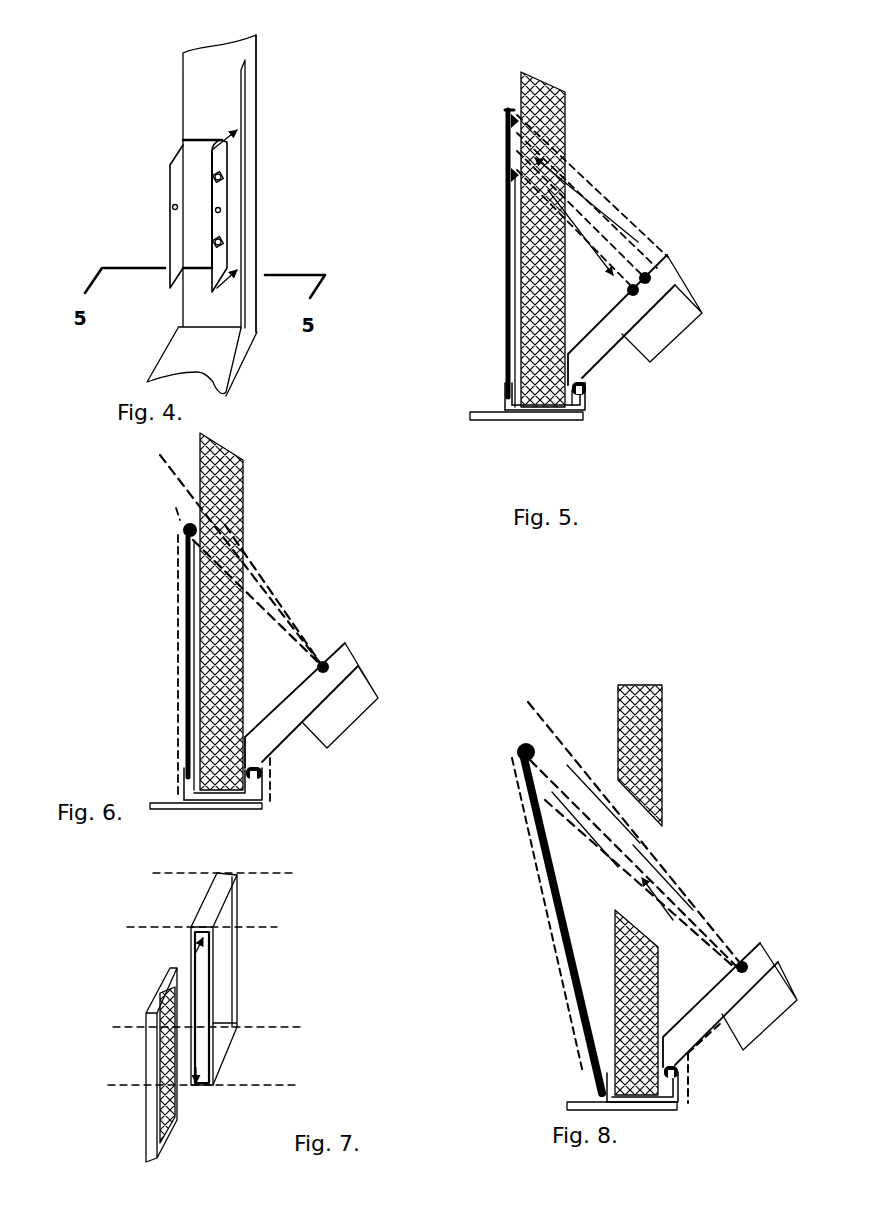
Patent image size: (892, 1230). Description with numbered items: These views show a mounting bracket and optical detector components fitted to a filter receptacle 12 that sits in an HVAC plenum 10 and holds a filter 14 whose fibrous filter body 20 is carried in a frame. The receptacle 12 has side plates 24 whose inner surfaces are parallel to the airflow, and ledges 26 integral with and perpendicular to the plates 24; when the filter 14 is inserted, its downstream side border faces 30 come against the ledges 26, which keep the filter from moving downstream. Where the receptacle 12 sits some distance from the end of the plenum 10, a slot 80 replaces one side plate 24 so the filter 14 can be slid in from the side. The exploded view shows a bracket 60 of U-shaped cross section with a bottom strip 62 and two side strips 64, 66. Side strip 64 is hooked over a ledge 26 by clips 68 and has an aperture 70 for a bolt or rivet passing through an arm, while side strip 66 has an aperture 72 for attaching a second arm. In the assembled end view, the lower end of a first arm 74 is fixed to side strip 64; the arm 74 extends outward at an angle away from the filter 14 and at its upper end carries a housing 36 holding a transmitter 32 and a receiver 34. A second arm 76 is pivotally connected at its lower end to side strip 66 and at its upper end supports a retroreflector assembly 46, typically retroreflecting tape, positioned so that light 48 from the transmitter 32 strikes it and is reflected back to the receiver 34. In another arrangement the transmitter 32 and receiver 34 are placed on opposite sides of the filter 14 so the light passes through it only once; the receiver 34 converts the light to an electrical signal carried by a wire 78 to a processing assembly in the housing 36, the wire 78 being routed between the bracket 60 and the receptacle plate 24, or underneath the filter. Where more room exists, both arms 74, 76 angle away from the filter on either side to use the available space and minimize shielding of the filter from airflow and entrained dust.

In FIG. 7, the HVAC plenum 10 is at (122, 1085).
In FIG. 4, the filter receptacle 12 is at (192, 342).
In FIG. 7, the filter receptacle 12 is at (212, 907).
In FIG. 5, the filter 14 is at (572, 116).
In FIG. 6, the filter 14 is at (248, 487).
In FIG. 8, the filter 14 is at (668, 775).
In FIG. 7, the filter body 20 is at (145, 1102).
In FIG. 4, the side plates 24 is at (213, 78).
In FIG. 5, the side plates 24 is at (512, 420).
In FIG. 6, the side plates 24 is at (222, 812).
In FIG. 7, the side plates 24 is at (220, 885).
In FIG. 8, the side plates 24 is at (560, 1104).
In FIG. 4, the ledges 26 is at (250, 262).
In FIG. 5, the ledges 26 is at (589, 408).
In FIG. 7, the ledges 26 is at (232, 1037).
In FIG. 7, the downstream side border faces 30 is at (173, 1120).
In FIG. 5, the transmitter 32 is at (652, 275).
In FIG. 6, the transmitter 32 is at (330, 665).
In FIG. 8, the transmitter 32 is at (741, 960).
In FIG. 5, the receiver 34 is at (648, 303).
In FIG. 6, the receiver 34 is at (182, 525).
In FIG. 8, the receiver 34 is at (515, 762).
In FIG. 5, the housing 36 is at (689, 287).
In FIG. 6, the housing 36 is at (365, 673).
In FIG. 5, the retroreflector assembly 46 is at (509, 133).
In FIG. 5, the light 48 is at (591, 214).
In FIG. 4, the bracket 60 is at (195, 155).
In FIG. 5, the bracket 60 is at (540, 410).
In FIG. 6, the bracket 60 is at (223, 783).
In FIG. 4, the bottom strip 62 is at (227, 135).
In FIG. 4, the side strip 64 is at (220, 260).
In FIG. 5, the side strip 64 is at (588, 412).
In FIG. 4, the side strip 66 is at (170, 168).
In FIG. 5, the side strip 66 is at (505, 388).
In FIG. 6, the side strip 66 is at (185, 775).
In FIG. 8, the side strip 66 is at (595, 1077).
In FIG. 4, the clips 68 is at (222, 240).
In FIG. 5, the clips 68 is at (591, 399).
In FIG. 4, the aperture 70 is at (220, 207).
In FIG. 4, the aperture 72 is at (173, 205).
In FIG. 5, the first arm 74 is at (605, 357).
In FIG. 6, the first arm 74 is at (300, 718).
In FIG. 8, the first arm 74 is at (720, 1005).
In FIG. 5, the second arm 76 is at (506, 229).
In FIG. 6, the second arm 76 is at (186, 617).
In FIG. 8, the second arm 76 is at (558, 927).
In FIG. 6, the wire 78 is at (178, 573).
In FIG. 7, the slot 80 is at (200, 1062).